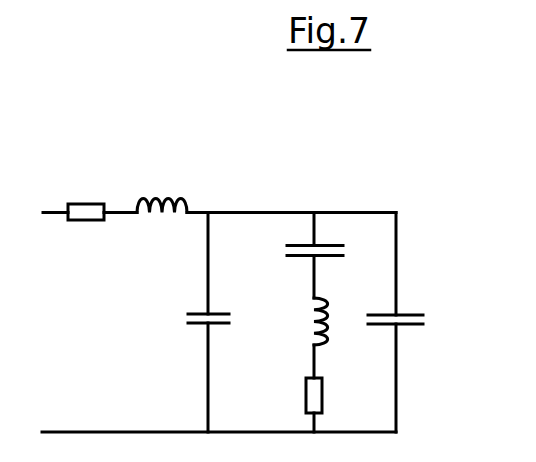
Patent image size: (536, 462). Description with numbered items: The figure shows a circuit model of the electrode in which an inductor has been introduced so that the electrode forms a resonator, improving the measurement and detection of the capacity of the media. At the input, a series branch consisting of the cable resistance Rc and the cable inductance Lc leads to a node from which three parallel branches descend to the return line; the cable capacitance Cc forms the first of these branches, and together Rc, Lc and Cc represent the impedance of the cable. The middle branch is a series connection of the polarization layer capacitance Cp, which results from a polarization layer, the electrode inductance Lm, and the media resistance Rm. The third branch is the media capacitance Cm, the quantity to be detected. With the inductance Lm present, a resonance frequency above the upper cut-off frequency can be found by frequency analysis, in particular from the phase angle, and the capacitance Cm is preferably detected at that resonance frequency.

The cable resistance Rc is at (86, 193).
The cable inductance Lc is at (162, 187).
The cable capacitance Cc is at (190, 317).
The polarization layer capacitance Cp is at (296, 243).
The electrode inductor Lm is at (297, 321).
The media resistance Rm is at (288, 395).
The media capacitance Cm is at (418, 322).